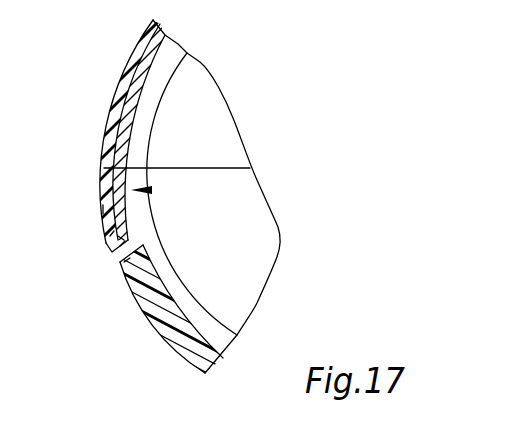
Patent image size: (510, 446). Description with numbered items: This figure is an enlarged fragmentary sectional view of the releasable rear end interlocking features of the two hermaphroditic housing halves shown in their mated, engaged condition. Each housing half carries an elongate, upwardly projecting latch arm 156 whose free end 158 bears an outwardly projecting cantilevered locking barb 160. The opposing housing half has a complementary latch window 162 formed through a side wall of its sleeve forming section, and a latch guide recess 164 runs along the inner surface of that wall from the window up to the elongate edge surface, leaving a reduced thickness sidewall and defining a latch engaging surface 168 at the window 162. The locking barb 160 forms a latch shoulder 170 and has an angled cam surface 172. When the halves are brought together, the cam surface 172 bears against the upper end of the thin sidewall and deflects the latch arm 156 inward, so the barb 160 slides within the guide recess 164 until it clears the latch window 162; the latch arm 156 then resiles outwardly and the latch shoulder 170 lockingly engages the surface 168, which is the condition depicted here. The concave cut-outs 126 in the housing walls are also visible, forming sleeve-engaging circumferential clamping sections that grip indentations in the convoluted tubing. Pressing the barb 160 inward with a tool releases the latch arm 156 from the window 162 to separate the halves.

The cut-out 126 is at (170, 87).
The latch arm 156 is at (121, 141).
The free end 158 is at (121, 259).
The locking barb 160 is at (120, 236).
The latch window 162 is at (124, 262).
The latch guide recess 164 is at (150, 190).
The latch engaging surface 168 is at (104, 209).
The latch shoulder 170 is at (112, 234).
The angled cam surface 172 is at (122, 243).